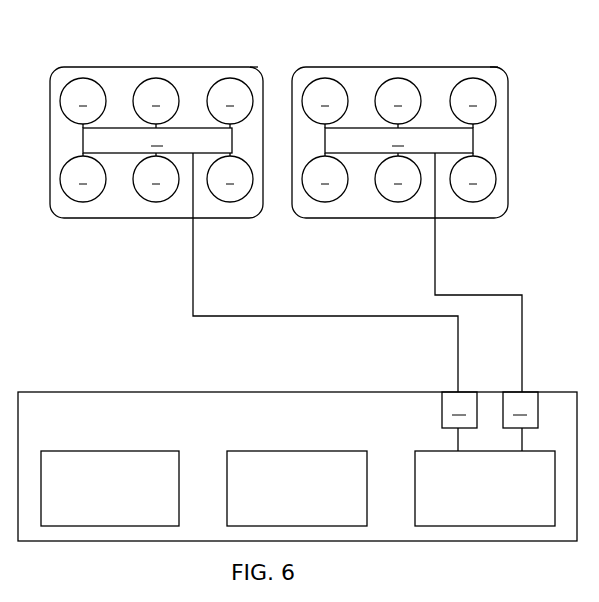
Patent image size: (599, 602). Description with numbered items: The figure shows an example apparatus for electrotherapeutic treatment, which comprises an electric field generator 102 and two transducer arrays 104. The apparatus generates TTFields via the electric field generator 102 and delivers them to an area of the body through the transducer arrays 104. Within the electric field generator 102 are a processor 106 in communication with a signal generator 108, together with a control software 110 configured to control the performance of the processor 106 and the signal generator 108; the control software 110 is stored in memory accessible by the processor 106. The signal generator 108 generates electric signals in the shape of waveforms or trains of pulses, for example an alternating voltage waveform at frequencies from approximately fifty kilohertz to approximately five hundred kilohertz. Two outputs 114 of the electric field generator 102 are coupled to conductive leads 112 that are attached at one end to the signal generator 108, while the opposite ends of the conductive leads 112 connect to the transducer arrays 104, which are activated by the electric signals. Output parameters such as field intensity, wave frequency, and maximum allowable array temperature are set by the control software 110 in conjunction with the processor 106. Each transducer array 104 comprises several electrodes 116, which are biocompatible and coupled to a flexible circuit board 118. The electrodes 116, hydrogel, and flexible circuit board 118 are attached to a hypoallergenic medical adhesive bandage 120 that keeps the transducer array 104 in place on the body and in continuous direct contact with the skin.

The electric field generator 102 is at (290, 435).
The transducer array 104 is at (147, 43).
The processor 106 is at (290, 502).
The signal generator 108 is at (478, 502).
The control software 110 is at (103, 502).
The conductive lead 112 is at (253, 316).
The output 114 is at (490, 421).
The electrode 116 is at (278, 140).
The flexible circuit board 118 is at (278, 140).
The hypoallergenic medical adhesive bandage 120 is at (258, 67).